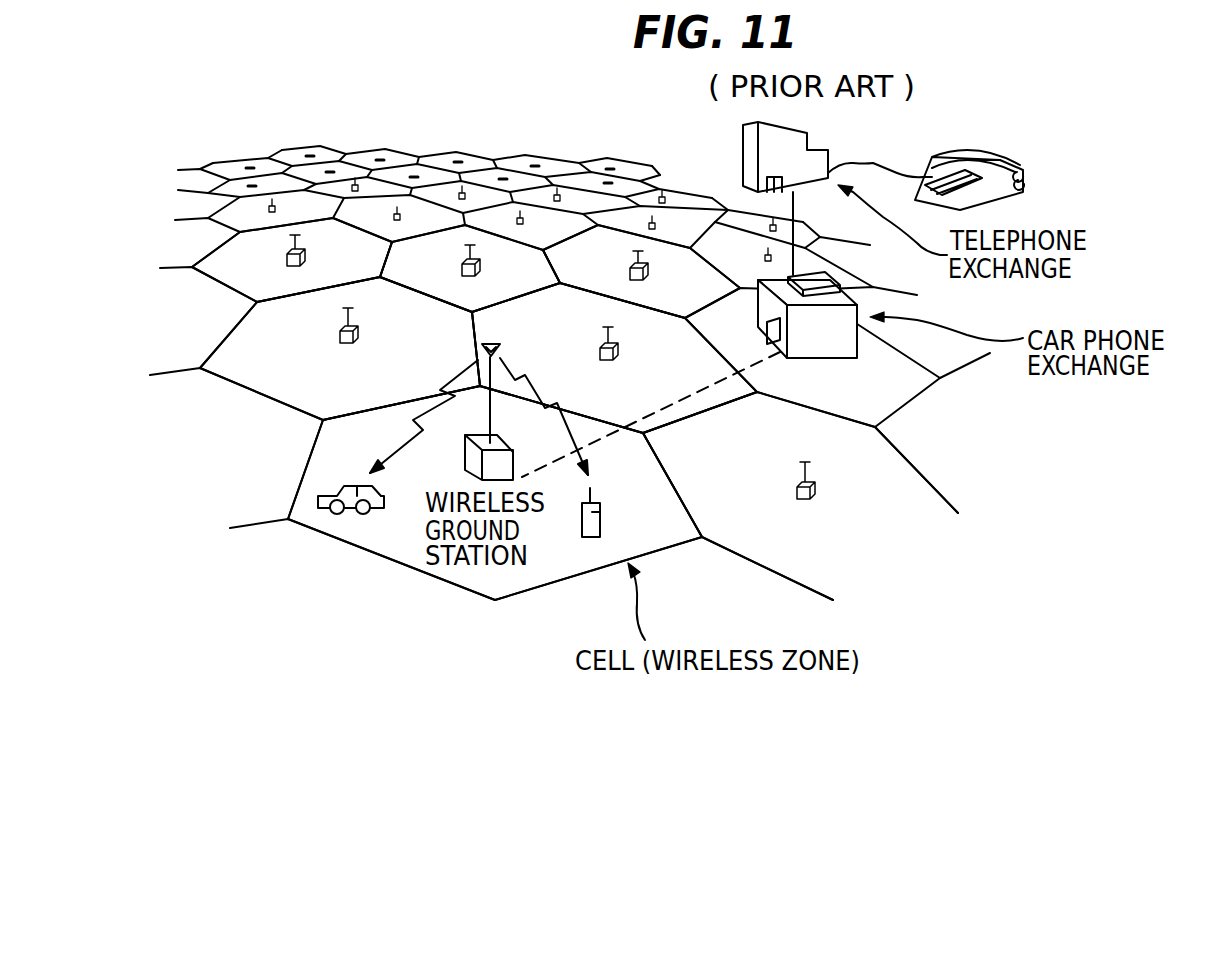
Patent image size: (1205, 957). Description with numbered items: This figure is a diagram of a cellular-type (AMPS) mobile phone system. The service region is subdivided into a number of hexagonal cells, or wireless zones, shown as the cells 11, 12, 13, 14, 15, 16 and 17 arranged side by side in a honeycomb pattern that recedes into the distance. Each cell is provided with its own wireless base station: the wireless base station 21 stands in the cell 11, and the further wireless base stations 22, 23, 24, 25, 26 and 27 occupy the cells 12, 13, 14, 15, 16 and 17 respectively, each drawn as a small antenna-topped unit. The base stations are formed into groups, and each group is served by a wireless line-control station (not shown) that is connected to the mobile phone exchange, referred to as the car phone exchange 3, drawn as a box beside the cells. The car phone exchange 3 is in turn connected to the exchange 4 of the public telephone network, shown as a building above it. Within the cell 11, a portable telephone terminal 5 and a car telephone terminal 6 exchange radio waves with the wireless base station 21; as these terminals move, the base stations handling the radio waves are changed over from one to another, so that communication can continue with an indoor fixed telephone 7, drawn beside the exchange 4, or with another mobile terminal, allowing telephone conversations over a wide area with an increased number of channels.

The cell (wireless zone) 11 is at (413, 556).
The cell (wireless zone) 12 is at (858, 551).
The cell (wireless zone) 13 is at (290, 383).
The cell (wireless zone) 14 is at (700, 402).
The cell (wireless zone) 15 is at (240, 280).
The cell (wireless zone) 16 is at (507, 290).
The cell (wireless zone) 17 is at (700, 295).
The wireless base station 21 is at (463, 459).
The wireless base station 22 is at (817, 490).
The wireless base station 23 is at (362, 338).
The wireless base station 24 is at (615, 352).
The wireless base station 25 is at (302, 258).
The wireless base station 26 is at (478, 267).
The wireless base station 27 is at (643, 270).
The car phone exchange 3 is at (837, 342).
The exchange of a public telephone network 4 is at (742, 143).
The portable telephone terminal 5 is at (600, 517).
The car telephone terminal 6 is at (350, 487).
The indoor fixed telephone 7 is at (1027, 175).